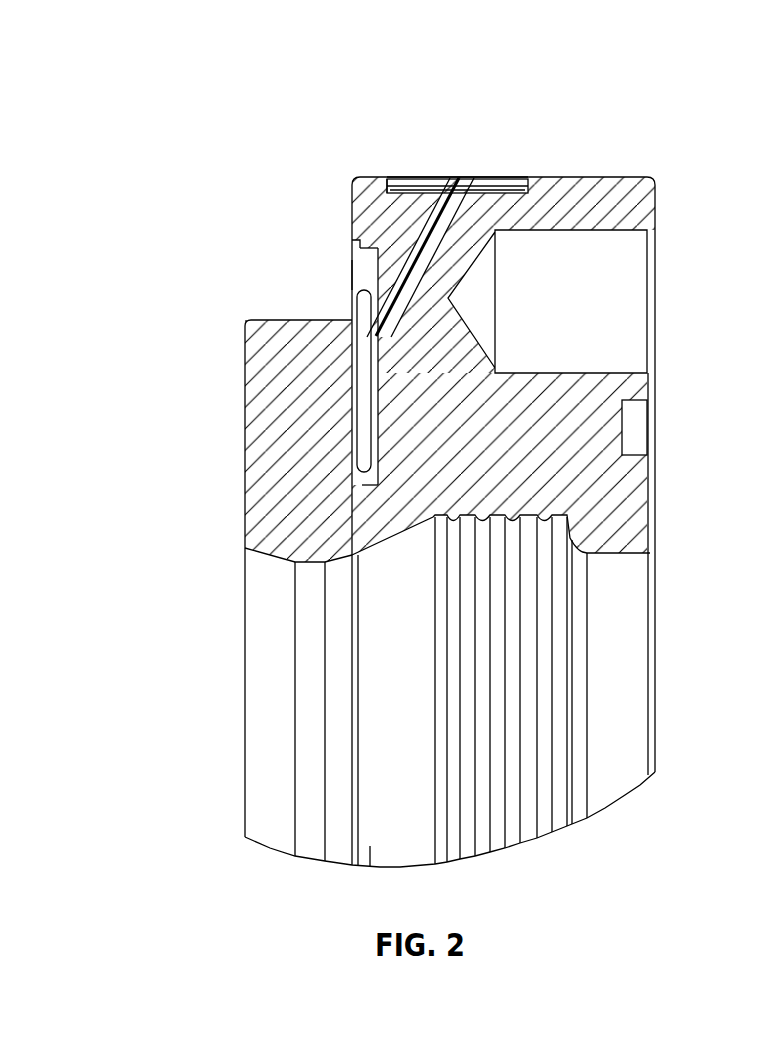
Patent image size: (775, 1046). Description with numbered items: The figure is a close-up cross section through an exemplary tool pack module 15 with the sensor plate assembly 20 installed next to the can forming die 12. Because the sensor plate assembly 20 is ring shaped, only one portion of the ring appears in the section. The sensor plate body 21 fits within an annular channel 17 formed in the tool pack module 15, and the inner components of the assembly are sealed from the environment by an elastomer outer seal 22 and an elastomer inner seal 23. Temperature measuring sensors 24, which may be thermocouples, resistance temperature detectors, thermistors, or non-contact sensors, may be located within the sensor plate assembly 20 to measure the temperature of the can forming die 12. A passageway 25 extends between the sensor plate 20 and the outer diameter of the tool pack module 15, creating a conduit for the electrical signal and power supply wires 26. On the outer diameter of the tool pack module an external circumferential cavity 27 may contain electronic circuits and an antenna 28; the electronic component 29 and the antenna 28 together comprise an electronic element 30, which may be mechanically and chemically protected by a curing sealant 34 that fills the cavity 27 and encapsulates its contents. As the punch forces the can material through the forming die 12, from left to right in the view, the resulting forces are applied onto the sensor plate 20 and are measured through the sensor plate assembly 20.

The can forming die 12 is at (280, 420).
The tool pack module 15 is at (612, 203).
The annular channel 17 is at (383, 423).
The sensor plate assembly 20 is at (345, 289).
The sensor plate body 21 is at (362, 267).
The outer seal 22 is at (350, 242).
The inner seal 23 is at (362, 483).
The temperature measuring sensors 24 is at (364, 360).
The passageway 25 is at (400, 250).
The electrical signal and power supply wires 26 is at (425, 232).
The external circumferential cavity 27 is at (530, 188).
The antenna 28 is at (508, 178).
The electronic component 29 is at (462, 175).
The electronic element 30 is at (441, 175).
The curing sealant 34 is at (415, 172).